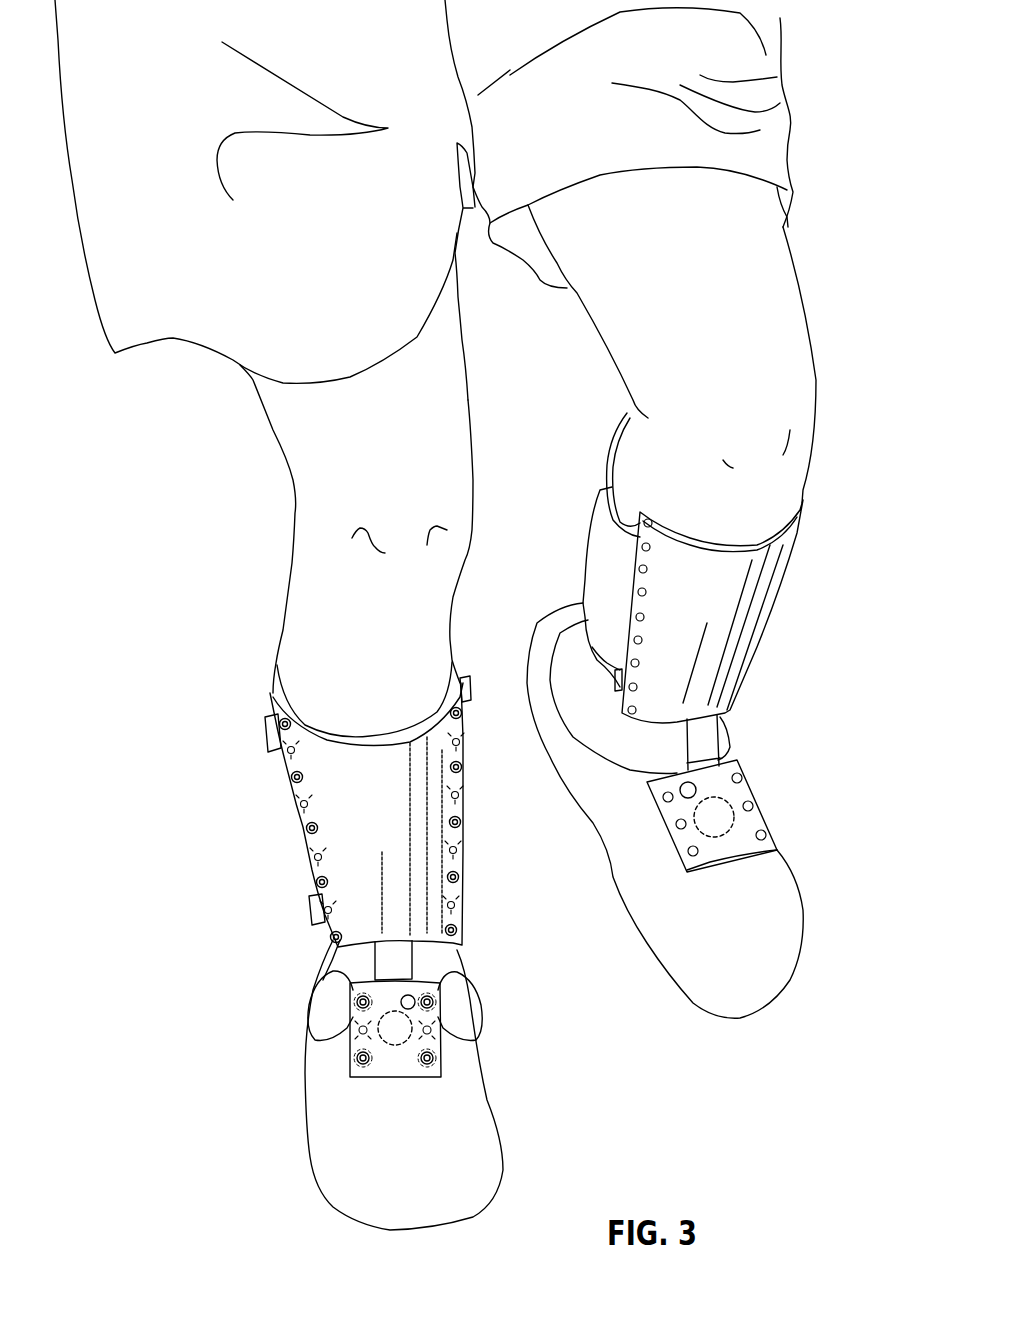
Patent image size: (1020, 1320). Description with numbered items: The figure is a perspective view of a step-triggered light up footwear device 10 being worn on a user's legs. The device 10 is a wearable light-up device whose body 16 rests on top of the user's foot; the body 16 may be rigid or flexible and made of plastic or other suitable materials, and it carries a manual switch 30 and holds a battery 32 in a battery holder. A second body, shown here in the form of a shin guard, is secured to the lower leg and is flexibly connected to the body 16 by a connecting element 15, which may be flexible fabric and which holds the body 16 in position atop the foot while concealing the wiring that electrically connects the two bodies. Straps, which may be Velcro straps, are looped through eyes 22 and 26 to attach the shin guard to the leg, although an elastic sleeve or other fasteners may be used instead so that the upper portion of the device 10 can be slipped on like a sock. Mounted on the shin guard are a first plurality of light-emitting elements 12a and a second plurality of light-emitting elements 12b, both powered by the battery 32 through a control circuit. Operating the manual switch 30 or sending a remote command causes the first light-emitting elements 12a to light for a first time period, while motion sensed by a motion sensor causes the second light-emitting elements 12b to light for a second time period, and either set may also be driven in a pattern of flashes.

The step-triggered light up footwear device 10 is at (212, 643).
The first light-emitting element 12a is at (270, 723).
The second light-emitting element 12b is at (285, 773).
The connecting element 15 is at (417, 968).
The body 16 is at (347, 973).
The eye 22 is at (277, 746).
The eye 26 is at (310, 893).
The manual switch 30 is at (413, 990).
The battery 32 is at (393, 1067).